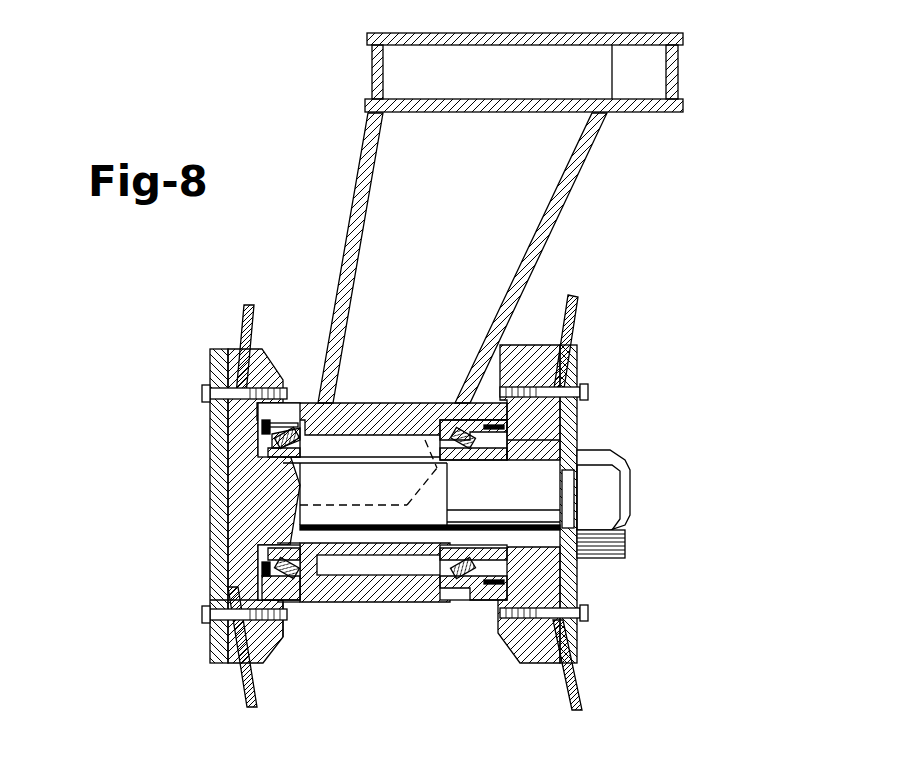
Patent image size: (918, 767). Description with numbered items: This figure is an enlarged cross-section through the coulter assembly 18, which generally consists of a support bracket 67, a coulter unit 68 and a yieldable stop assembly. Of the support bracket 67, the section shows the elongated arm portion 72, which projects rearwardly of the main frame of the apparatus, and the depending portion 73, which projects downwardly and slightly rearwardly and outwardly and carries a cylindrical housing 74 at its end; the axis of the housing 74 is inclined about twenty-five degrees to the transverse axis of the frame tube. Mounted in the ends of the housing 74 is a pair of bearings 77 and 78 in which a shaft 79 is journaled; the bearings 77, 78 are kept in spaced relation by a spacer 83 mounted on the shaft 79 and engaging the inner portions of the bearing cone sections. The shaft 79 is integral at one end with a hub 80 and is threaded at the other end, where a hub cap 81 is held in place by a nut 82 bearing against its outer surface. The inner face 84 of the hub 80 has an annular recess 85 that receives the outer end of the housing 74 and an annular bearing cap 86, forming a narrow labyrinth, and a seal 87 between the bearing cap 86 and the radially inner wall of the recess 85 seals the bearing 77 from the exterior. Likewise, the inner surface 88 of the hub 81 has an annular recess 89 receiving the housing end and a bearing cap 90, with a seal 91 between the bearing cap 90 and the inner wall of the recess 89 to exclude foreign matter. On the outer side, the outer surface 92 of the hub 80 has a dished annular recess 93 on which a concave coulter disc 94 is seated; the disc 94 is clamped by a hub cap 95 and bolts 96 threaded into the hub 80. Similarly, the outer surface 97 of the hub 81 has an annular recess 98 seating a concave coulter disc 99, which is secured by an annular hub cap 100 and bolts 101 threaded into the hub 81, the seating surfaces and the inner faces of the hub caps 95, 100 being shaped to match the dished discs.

The coulter assembly 18 is at (686, 198).
The support bracket 67 is at (346, 234).
The coulter unit 68 is at (636, 501).
The elongated arm portion 72 is at (680, 80).
The depending portion 73 is at (548, 236).
The cylindrical housing 74 is at (388, 403).
The bearing 77 is at (300, 480).
The bearing 78 is at (470, 465).
The shaft 79 is at (383, 497).
The hub 80 is at (230, 525).
The hub cap 81 is at (578, 430).
The nut 82 is at (630, 533).
The spacer 83 is at (382, 545).
The inner face 84 is at (287, 388).
The annular recess 85 is at (262, 432).
The annular bearing cap 86 is at (243, 408).
The seal 87 is at (275, 455).
The inner surface 88 is at (497, 390).
The annular recess 89 is at (578, 411).
The bearing cap 90 is at (578, 442).
The seal 91 is at (578, 575).
The outer surface 92 is at (225, 568).
The annular recess 93 is at (262, 653).
The coulter disc 94 is at (245, 693).
The hub cap 95 is at (212, 640).
The bolts 96 is at (200, 615).
The outer surface 97 is at (578, 570).
The annular recess 98 is at (510, 640).
The coulter disc 99 is at (585, 686).
The annular hub cap 100 is at (580, 647).
The bolts 101 is at (592, 616).